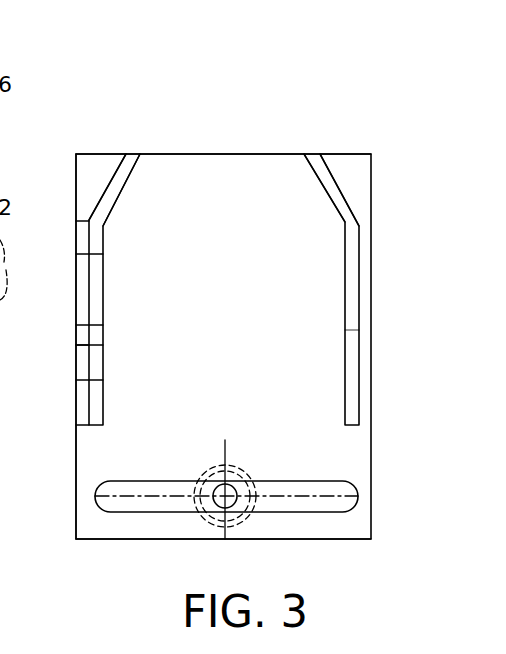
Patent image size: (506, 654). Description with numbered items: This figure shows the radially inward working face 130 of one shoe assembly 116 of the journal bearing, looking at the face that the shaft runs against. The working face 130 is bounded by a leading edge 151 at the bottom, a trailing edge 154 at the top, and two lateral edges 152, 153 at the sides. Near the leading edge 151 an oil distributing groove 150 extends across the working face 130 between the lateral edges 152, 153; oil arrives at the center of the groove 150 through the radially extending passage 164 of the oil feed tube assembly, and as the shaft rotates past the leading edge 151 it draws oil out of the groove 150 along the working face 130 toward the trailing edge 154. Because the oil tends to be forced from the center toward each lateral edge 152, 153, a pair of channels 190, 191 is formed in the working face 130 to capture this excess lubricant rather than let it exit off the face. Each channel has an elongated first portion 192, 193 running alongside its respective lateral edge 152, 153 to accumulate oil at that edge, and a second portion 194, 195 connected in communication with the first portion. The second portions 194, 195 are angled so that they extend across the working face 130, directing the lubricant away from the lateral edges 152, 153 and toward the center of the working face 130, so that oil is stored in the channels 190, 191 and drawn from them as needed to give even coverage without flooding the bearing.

The shoe assembly 116 is at (207, 93).
The working face 130 is at (242, 172).
The oil distributing groove 150 is at (343, 500).
The leading edge 151 is at (190, 540).
The lateral edge 152 is at (77, 500).
The lateral edge 153 is at (371, 400).
The trailing edge 154 is at (180, 153).
The passage 164 is at (230, 487).
The channel 190 is at (88, 290).
The channel 191 is at (358, 298).
The first portion 192 is at (95, 345).
The first portion 193 is at (350, 340).
The second portion 194 is at (108, 196).
The second portion 195 is at (334, 194).